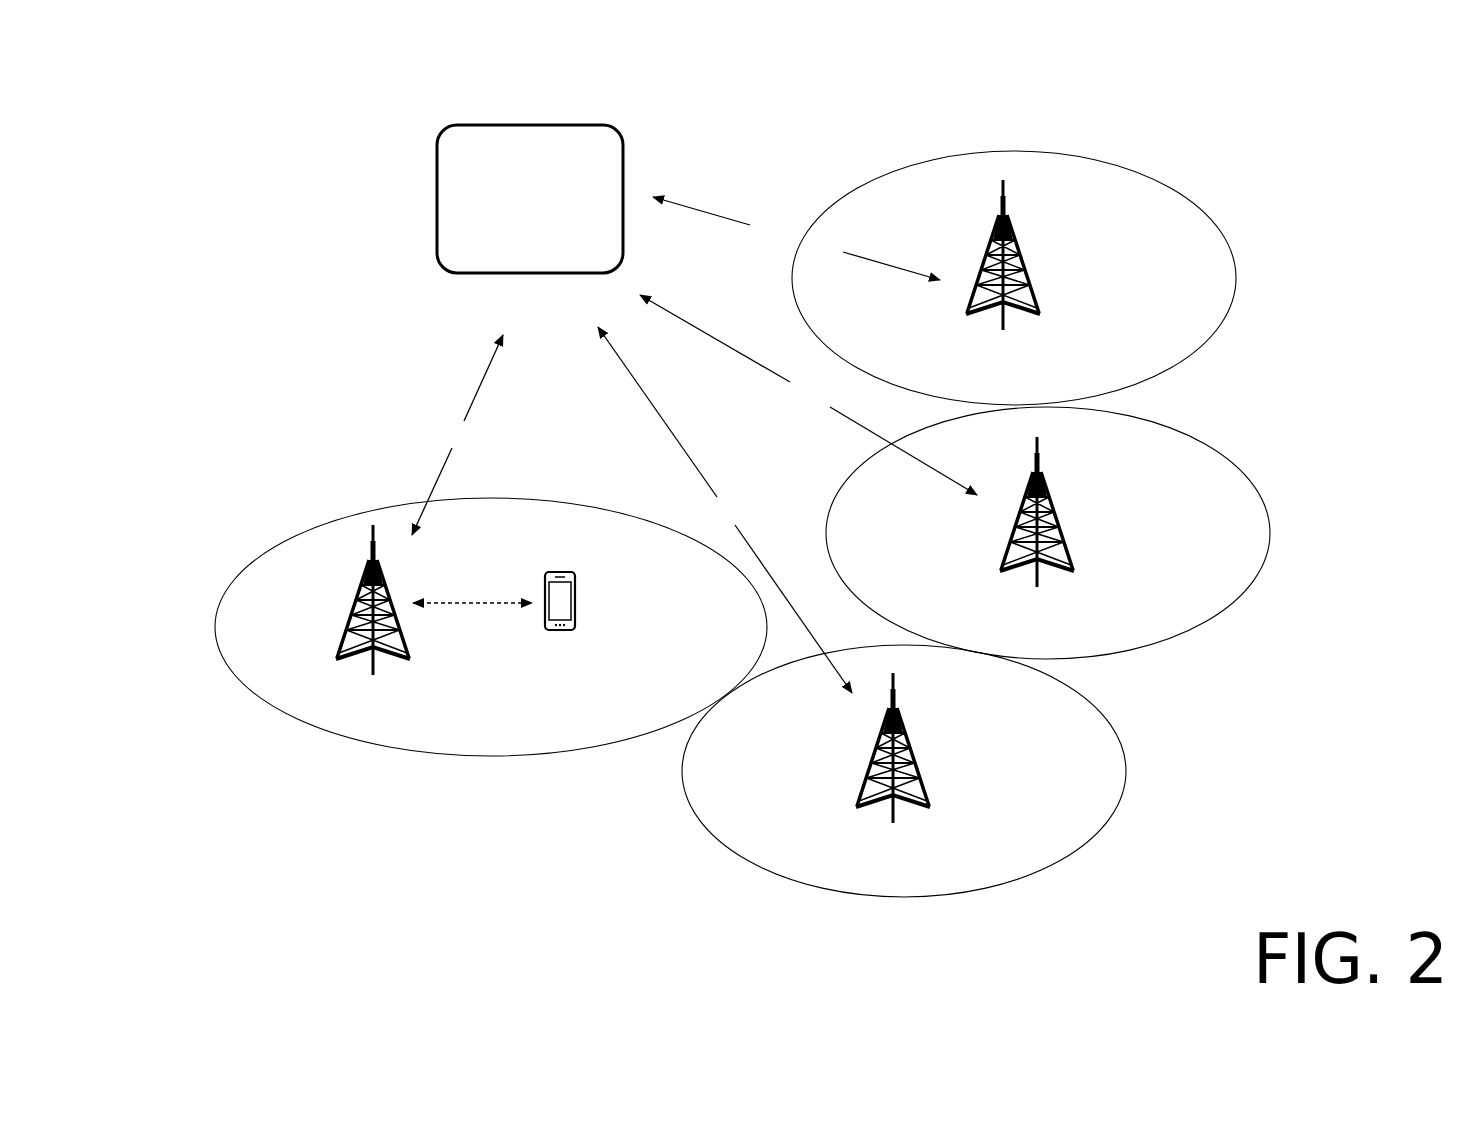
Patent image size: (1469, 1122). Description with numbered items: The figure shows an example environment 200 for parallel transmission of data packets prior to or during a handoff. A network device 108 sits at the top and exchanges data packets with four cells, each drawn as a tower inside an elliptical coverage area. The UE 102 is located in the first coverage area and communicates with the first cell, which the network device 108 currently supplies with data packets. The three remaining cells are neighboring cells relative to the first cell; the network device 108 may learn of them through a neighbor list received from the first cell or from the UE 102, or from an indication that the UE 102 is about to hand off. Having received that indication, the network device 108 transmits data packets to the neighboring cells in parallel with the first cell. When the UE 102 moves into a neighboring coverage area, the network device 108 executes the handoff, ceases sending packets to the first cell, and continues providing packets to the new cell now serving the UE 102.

The example environment 200 is at (194, 102).
The network device 108 is at (548, 238).
The UE 102 is at (563, 613).